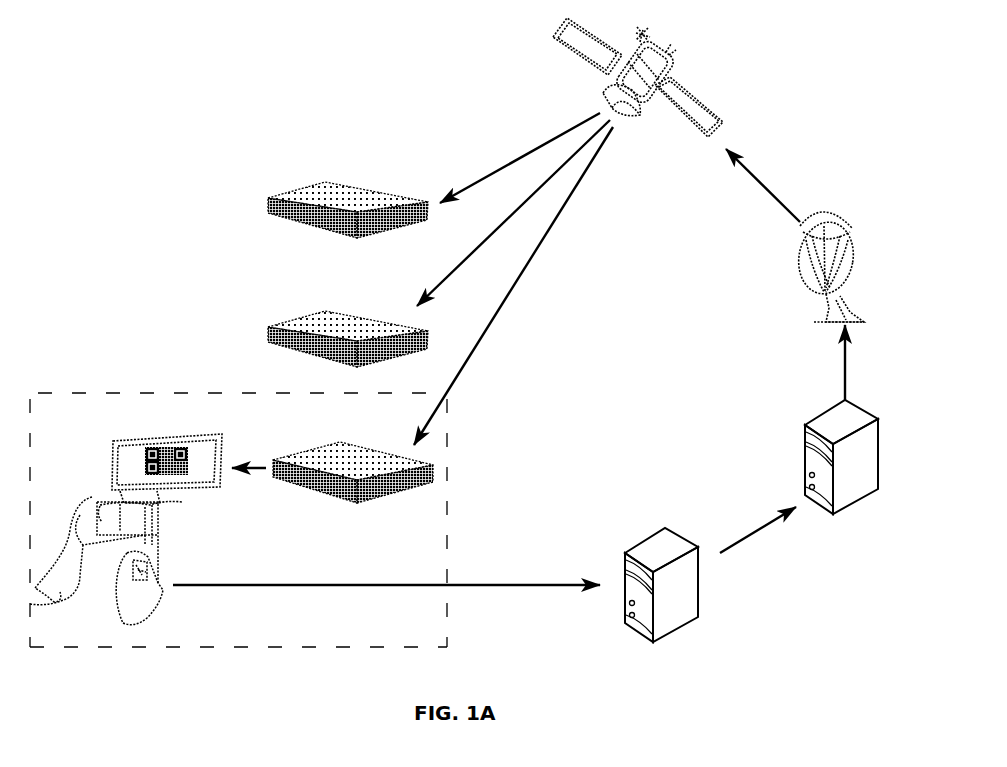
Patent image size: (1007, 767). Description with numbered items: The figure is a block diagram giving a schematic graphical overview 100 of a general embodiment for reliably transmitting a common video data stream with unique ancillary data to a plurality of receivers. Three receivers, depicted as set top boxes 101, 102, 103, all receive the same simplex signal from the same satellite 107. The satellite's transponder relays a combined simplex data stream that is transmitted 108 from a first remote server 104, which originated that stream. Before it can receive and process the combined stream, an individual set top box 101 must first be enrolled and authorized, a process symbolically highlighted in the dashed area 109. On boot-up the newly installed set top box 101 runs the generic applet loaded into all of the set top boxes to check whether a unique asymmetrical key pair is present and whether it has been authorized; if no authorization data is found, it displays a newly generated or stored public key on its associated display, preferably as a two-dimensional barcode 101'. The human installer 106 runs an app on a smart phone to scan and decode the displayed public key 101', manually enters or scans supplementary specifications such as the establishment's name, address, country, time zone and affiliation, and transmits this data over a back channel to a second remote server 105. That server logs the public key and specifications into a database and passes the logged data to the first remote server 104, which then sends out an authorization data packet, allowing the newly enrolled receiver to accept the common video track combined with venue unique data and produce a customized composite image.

The schematic graphical exemplary overview 100 is at (211, 79).
The receiver or set top box 101 is at (353, 453).
The displayed public key in two-dimensional barcode format 101' is at (149, 455).
The receiver or set top box 102 is at (338, 318).
The receiver or set top box 103 is at (338, 192).
The first remote server 104 is at (829, 512).
The second remote server 105 is at (680, 614).
The human installer 106 is at (135, 621).
The satellite 107 is at (676, 68).
The transmission of the combined simplex data stream 108 is at (827, 203).
The dashed area 109 is at (203, 397).